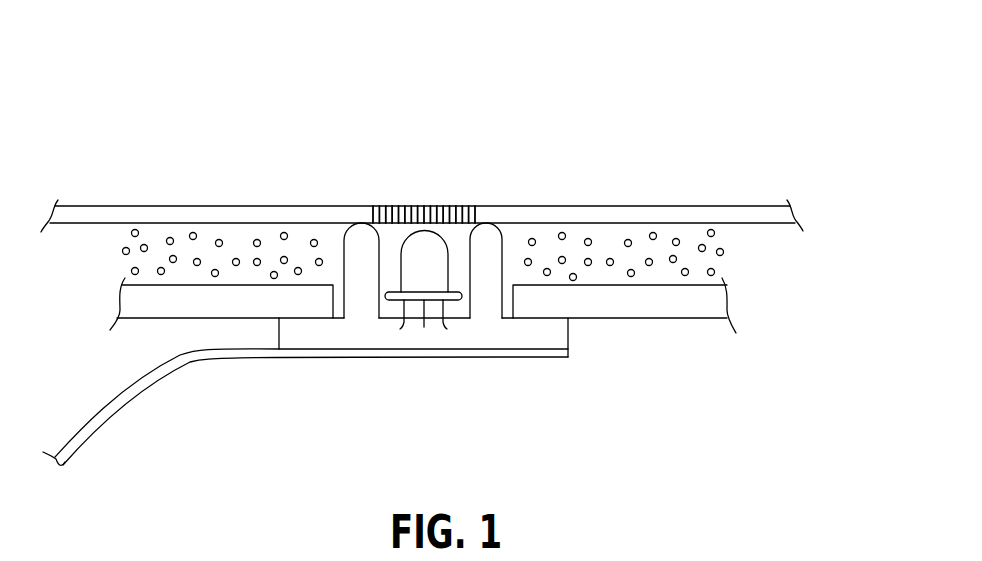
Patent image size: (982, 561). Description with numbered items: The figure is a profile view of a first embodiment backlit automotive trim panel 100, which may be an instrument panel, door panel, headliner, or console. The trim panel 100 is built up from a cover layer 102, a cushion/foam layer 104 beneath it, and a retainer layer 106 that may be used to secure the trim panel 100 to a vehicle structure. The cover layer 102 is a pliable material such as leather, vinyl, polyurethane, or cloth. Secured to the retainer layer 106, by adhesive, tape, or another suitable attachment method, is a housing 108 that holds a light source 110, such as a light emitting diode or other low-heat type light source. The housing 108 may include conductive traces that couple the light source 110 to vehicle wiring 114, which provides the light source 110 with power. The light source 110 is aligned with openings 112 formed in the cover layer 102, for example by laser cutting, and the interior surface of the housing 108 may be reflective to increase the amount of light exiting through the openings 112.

The backlit automotive trim panel 100 is at (623, 110).
The cover layer 102 is at (698, 207).
The cushion/foam layer 104 is at (685, 259).
The retainer layer 106 is at (653, 318).
The housing 108 is at (462, 350).
The light source 110 is at (395, 300).
The openings 112 is at (473, 188).
The vehicle wiring 114 is at (78, 437).